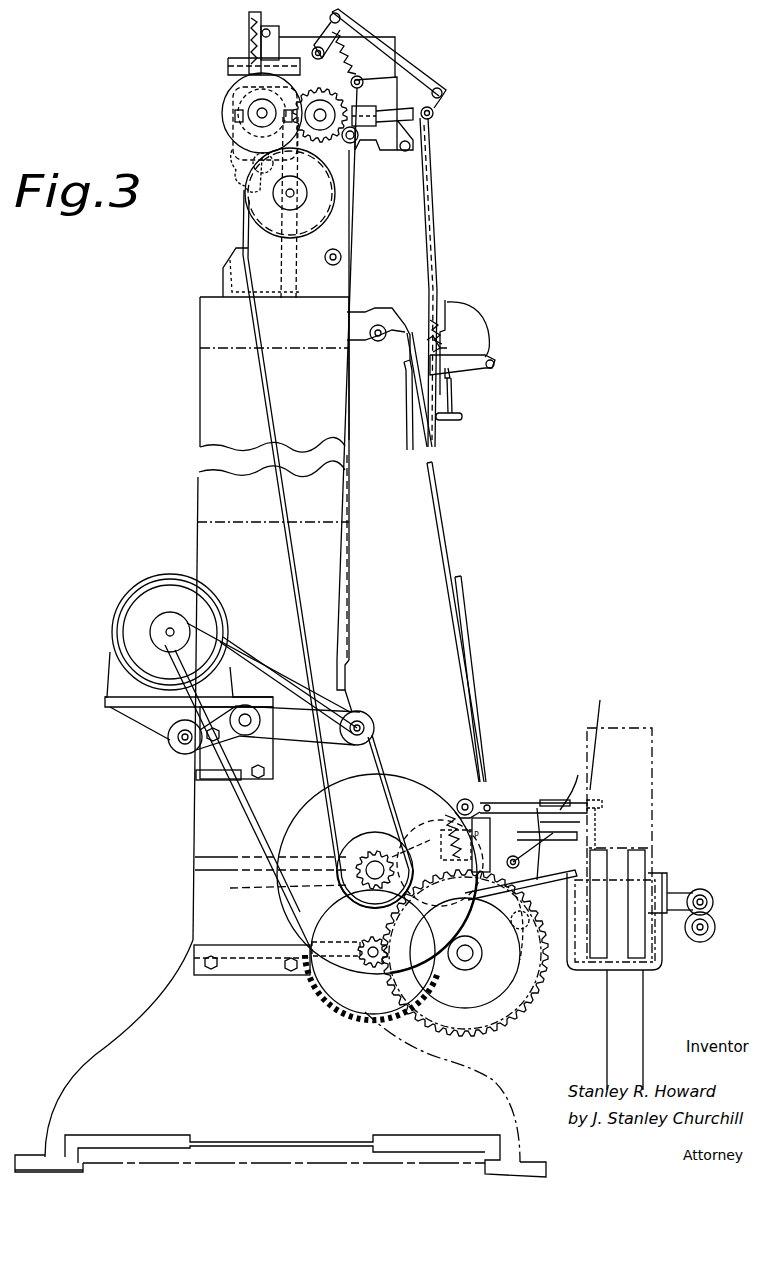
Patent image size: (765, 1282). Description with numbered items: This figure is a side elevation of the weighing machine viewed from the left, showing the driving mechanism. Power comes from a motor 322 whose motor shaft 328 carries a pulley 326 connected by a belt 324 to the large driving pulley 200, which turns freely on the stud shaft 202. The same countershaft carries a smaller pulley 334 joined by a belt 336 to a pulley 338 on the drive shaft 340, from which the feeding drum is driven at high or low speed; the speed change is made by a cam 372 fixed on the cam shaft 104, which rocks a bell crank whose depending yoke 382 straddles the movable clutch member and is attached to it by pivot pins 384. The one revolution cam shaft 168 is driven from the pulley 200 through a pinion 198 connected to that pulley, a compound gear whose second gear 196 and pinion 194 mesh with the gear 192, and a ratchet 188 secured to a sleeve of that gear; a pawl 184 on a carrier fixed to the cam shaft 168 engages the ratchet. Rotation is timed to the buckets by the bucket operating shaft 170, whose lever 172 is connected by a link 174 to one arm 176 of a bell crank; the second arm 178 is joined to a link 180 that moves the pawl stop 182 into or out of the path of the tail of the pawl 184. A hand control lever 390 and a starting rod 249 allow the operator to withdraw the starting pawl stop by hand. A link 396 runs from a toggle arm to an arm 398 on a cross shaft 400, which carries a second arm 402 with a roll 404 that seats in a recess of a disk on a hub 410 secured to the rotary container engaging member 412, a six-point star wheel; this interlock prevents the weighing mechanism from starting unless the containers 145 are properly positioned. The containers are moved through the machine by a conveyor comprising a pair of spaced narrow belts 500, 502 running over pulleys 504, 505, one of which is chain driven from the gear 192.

The cam shaft 104 is at (255, 112).
The containers 145 is at (655, 740).
The one revolution shaft 168 is at (466, 970).
The bucket operating shaft 170 is at (375, 350).
The lever 172 is at (395, 347).
The link 174 is at (435, 492).
The arm of bell crank 176 is at (490, 800).
The second arm of bell crank 178 is at (505, 830).
The link 180 is at (472, 778).
The pawl stop 182 is at (440, 815).
The pawl 184 is at (480, 890).
The ratchet 188 is at (535, 985).
The gear 192 is at (500, 1012).
The pinion 194 is at (362, 950).
The second gear 196 is at (328, 1002).
The pinion 198 is at (340, 885).
The driving pulley 200 is at (290, 830).
The stud shaft 202 is at (372, 868).
The starting rod 249 is at (455, 400).
The motor 322 is at (112, 628).
The belt 324 is at (292, 630).
The pulley 326 is at (152, 632).
The motor shaft 328 is at (166, 636).
The smaller pulley 334 is at (398, 740).
The belt 336 is at (342, 585).
The pulley 338 is at (258, 208).
The drive shaft 340 is at (298, 193).
The cam 372 is at (222, 118).
The yoke 382 is at (232, 84).
The pivot pins 384 is at (238, 150).
The hand control lever 390 is at (490, 358).
The link 396 is at (428, 262).
The arm 398 is at (548, 800).
The cross shaft 400 is at (598, 850).
The second arm 402 is at (600, 810).
The roll 404 is at (560, 800).
The hub 410 is at (593, 795).
The rotary container engaging member 412 is at (598, 730).
The narrow belt 500 is at (640, 855).
The narrow belt 502 is at (640, 870).
The pulley 504 is at (640, 882).
The pulley 505 is at (640, 960).